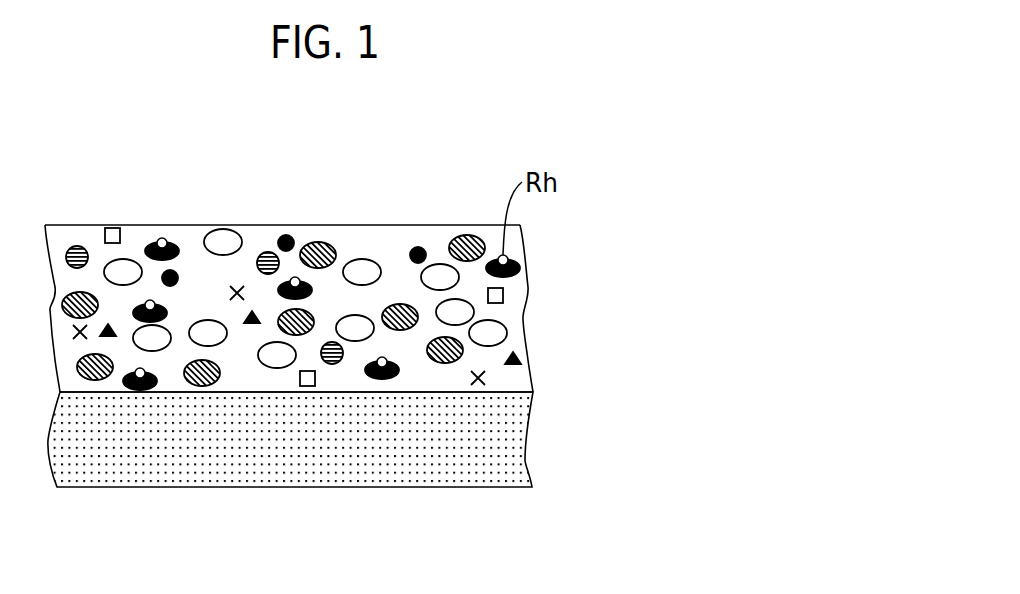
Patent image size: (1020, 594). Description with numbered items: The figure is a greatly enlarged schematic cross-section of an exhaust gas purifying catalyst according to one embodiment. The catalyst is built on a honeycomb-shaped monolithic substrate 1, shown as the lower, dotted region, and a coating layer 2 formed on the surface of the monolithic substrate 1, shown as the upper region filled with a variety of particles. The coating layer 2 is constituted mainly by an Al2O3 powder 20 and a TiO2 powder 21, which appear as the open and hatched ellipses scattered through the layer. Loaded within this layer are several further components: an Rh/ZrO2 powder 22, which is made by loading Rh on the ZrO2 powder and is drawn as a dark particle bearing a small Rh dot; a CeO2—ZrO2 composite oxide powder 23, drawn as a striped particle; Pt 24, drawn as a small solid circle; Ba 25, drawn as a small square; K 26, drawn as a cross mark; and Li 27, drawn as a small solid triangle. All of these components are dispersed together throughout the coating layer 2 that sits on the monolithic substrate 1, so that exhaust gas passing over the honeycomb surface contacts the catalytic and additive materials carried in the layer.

The monolithic substrate 1 is at (487, 440).
The coating layer 2 is at (512, 242).
The Al2O3 powder 20 is at (228, 240).
The TiO2 powder 21 is at (462, 238).
The Rh/ZrO2 powder 22 is at (506, 275).
The CeO2-ZrO2 composite oxide powder 23 is at (73, 245).
The Pt 24 is at (288, 236).
The Ba 25 is at (112, 228).
The K 26 is at (482, 378).
The Li 27 is at (518, 357).